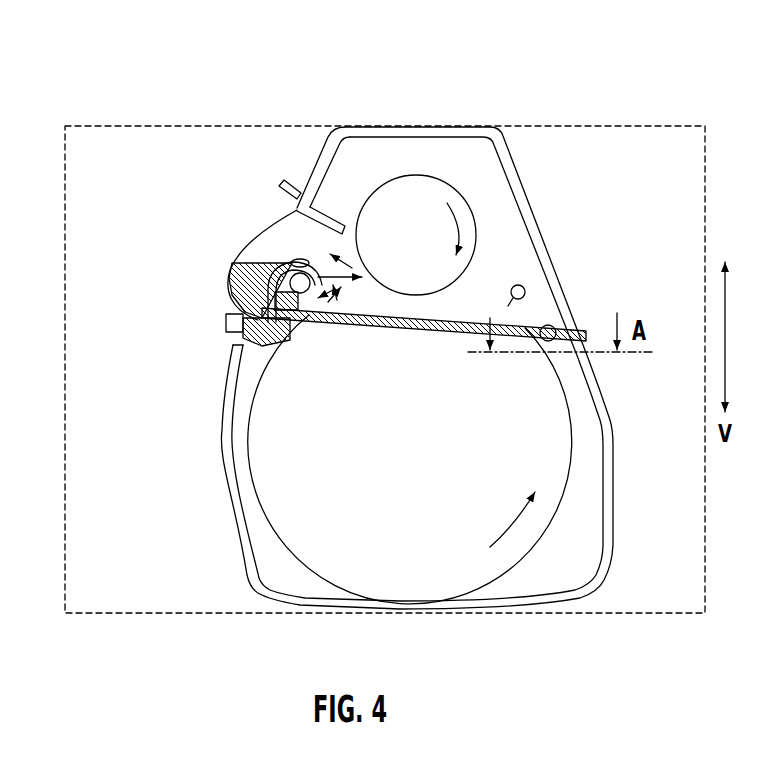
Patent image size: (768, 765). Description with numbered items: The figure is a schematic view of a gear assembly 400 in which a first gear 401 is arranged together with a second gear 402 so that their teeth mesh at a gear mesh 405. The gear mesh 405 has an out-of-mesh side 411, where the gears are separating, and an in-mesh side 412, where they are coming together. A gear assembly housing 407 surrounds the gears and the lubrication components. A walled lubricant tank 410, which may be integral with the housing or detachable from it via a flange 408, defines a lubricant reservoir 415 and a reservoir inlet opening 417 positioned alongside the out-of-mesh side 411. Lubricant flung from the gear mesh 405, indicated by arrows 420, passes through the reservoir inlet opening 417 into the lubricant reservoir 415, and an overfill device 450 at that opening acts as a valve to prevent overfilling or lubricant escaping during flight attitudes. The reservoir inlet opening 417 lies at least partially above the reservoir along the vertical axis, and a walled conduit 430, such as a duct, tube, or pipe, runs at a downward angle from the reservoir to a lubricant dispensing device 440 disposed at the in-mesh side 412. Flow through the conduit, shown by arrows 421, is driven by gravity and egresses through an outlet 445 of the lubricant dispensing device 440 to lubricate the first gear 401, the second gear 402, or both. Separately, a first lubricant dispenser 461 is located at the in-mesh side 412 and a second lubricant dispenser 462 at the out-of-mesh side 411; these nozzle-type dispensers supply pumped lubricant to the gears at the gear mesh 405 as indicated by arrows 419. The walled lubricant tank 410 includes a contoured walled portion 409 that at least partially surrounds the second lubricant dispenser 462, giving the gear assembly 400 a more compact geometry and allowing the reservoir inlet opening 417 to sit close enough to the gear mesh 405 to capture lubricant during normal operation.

The gear assembly 400 is at (432, 104).
The first gear 401 is at (462, 186).
The second gear 402 is at (433, 604).
The gear mesh 405 is at (463, 283).
The gear assembly housing 407 is at (226, 367).
The flange 408 is at (298, 172).
The walled portion 409 is at (252, 396).
The walled lubricant tank 410 is at (273, 207).
The out-of-mesh side 411 is at (322, 322).
The in-mesh side 412 is at (488, 302).
The lubricant reservoir 415 is at (259, 244).
The reservoir inlet opening 417 is at (350, 238).
The arrows 419 is at (324, 272).
The arrows 420 is at (346, 272).
The arrows 421 is at (246, 285).
The walled conduit 430 is at (403, 332).
The lubricant dispensing device 440 is at (553, 326).
The outlet 445 is at (553, 341).
The overfill device 450 is at (289, 255).
The first lubricant dispenser 461 is at (528, 283).
The second lubricant dispenser 462 is at (247, 307).